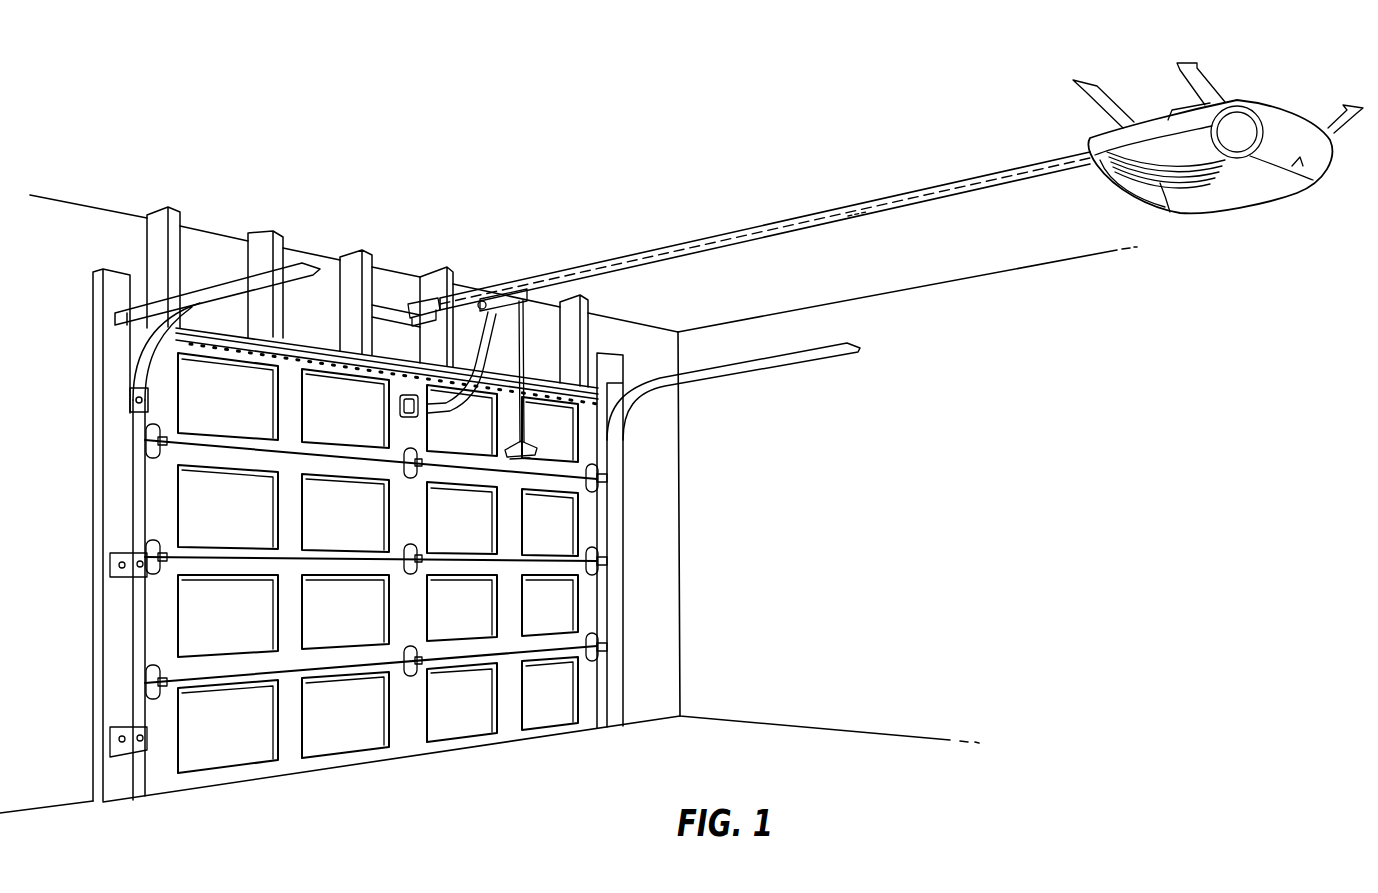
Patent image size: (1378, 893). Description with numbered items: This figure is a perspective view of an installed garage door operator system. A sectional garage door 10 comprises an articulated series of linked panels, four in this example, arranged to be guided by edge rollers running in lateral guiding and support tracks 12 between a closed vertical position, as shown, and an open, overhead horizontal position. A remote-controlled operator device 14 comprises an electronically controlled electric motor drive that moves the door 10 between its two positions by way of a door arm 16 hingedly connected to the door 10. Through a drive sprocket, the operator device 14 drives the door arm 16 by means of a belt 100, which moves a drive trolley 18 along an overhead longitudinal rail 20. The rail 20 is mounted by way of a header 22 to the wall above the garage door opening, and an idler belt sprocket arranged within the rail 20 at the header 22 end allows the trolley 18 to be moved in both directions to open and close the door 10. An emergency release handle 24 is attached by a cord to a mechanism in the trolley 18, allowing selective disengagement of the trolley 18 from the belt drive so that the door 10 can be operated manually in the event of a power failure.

The sectional garage door 10 is at (537, 610).
The lateral guiding and support tracks 12 is at (777, 363).
The remote-controlled operator device 14 is at (1242, 198).
The door arm 16 is at (452, 310).
The drive trolley 18 is at (505, 297).
The overhead longitudinal rail 20 is at (729, 223).
The header 22 is at (427, 315).
The emergency release handle 24 is at (537, 446).
The belt 100 is at (857, 218).